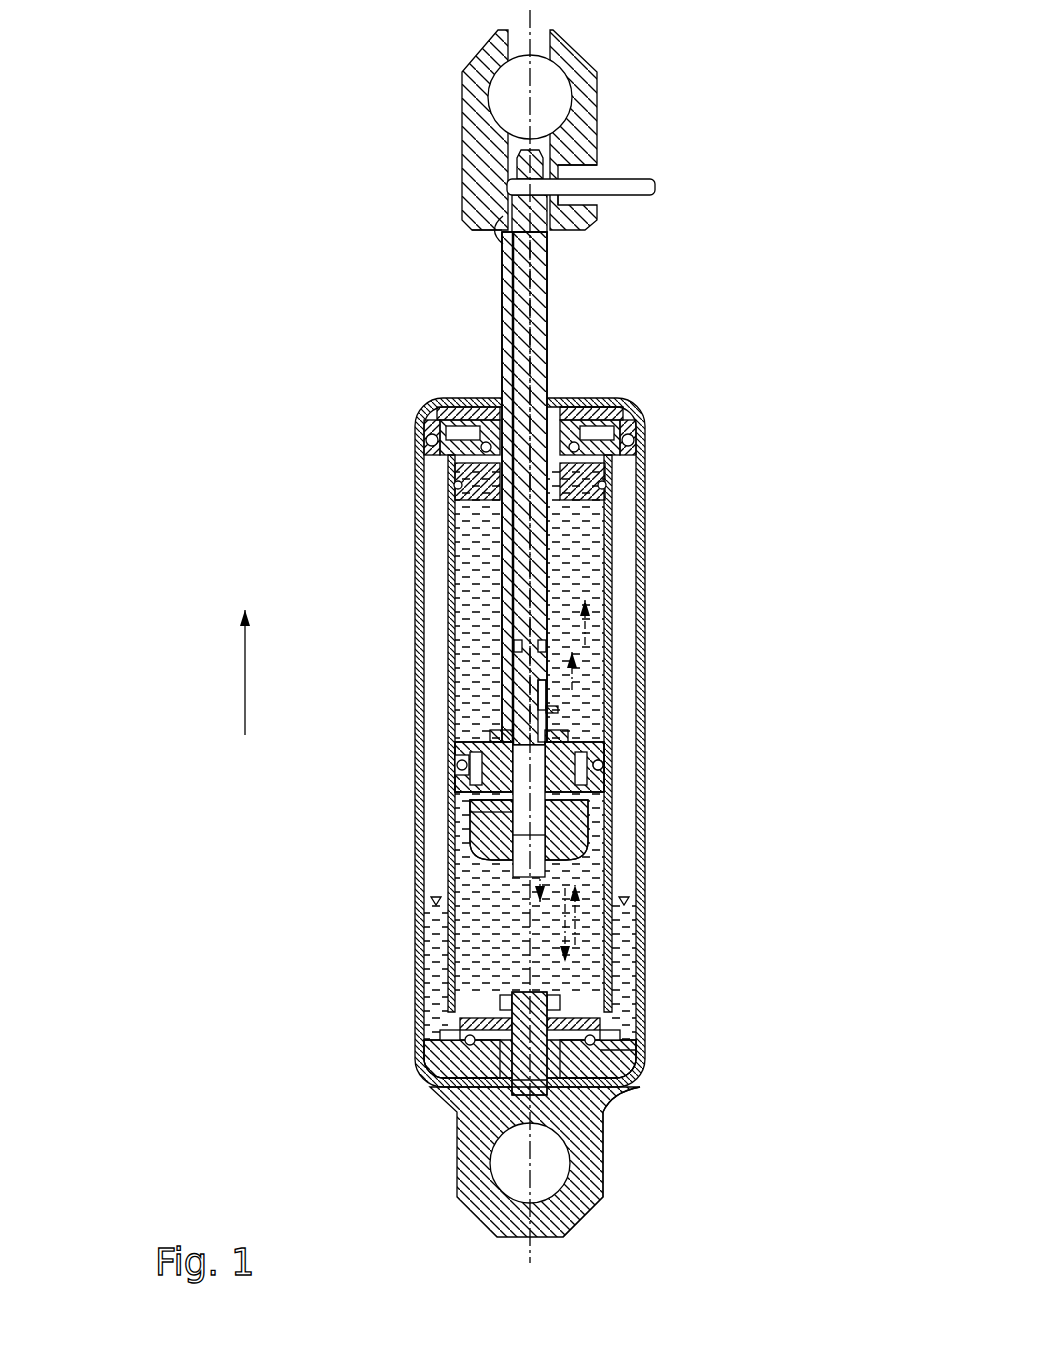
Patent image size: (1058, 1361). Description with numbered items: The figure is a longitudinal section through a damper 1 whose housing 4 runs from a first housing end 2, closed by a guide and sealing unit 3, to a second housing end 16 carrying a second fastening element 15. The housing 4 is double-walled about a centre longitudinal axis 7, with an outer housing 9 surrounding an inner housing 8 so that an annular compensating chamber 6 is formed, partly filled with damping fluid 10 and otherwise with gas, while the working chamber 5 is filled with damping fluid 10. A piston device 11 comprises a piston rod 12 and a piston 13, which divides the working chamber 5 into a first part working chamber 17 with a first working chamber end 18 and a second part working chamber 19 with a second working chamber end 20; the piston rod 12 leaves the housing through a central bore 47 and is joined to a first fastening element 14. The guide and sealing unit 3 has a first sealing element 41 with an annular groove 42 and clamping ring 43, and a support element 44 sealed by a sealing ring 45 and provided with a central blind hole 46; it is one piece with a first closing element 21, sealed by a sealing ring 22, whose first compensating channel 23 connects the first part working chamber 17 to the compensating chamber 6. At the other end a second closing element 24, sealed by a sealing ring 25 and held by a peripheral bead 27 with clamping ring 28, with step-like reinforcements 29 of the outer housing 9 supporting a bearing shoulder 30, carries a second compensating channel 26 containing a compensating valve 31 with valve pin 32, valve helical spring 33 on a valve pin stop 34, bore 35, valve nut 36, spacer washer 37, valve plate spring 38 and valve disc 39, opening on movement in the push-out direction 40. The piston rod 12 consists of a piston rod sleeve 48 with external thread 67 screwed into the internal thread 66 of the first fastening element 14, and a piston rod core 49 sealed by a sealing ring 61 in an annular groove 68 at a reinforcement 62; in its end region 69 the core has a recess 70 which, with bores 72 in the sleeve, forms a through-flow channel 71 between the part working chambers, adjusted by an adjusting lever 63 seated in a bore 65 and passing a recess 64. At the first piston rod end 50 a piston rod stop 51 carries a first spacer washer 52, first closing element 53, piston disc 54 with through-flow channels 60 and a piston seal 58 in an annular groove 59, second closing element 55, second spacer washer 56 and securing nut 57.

The damper 1 is at (470, 636).
The first housing end 2 is at (646, 448).
The guide and sealing unit 3 is at (588, 408).
The housing 4 is at (647, 715).
The working chamber 5 is at (609, 572).
The compensating chamber 6 is at (628, 878).
The centre longitudinal axis 7 is at (528, 300).
The inner housing 8 is at (590, 600).
The outer housing 9 is at (590, 655).
The damping fluid 10 is at (598, 912).
The piston device 11 is at (482, 693).
The piston rod 12 is at (495, 328).
The piston 13 is at (472, 728).
The first fastening element 14 is at (458, 119).
The second fastening element 15 is at (525, 1163).
The second housing end 16 is at (628, 1098).
The first part working chamber 17 is at (609, 572).
The first working chamber end 18 is at (627, 520).
The second part working chamber 19 is at (610, 940).
The second working chamber end 20 is at (582, 1030).
The first closing element 21 is at (614, 470).
The sealing ring 22 is at (600, 487).
The first compensating channel 23 is at (602, 460).
The second closing element 24 is at (492, 1096).
The sealing ring 25 is at (610, 1060).
The second compensating channel 26 is at (620, 1076).
The peripheral bead 27 is at (481, 1073).
The clamping ring 28 is at (450, 1052).
The step-like reinforcements 29 is at (600, 1020).
The bearing shoulder 30 is at (460, 1040).
The compensating valve 31 is at (468, 1020).
The valve pin 32 is at (585, 1200).
The valve helical spring 33 is at (590, 1150).
The valve pin stop 34 is at (504, 1082).
The bore 35 is at (470, 1037).
The valve nut 36 is at (483, 1000).
The spacer washer 37 is at (498, 1012).
The valve plate spring 38 is at (598, 1040).
The valve disc 39 is at (594, 1002).
The push-out direction 40 is at (245, 678).
The first sealing element 41 is at (592, 398).
The annular groove 42 is at (604, 412).
The clamping ring 43 is at (626, 425).
The support element 44 is at (428, 437).
The sealing ring 45 is at (445, 443).
The central blind hole 46 is at (466, 408).
The central bore 47 is at (523, 437).
The piston rod sleeve 48 is at (541, 247).
The piston rod core 49 is at (557, 225).
The first piston rod end 50 is at (572, 780).
The piston rod stop 51 is at (598, 765).
The first spacer washer 52 is at (527, 700).
The first closing element 53 is at (468, 743).
The piston disc 54 is at (498, 790).
The second closing element 55 is at (474, 804).
The second spacer washer 56 is at (484, 840).
The securing nut 57 is at (482, 858).
The piston seal 58 is at (478, 770).
The annular groove 59 is at (560, 795).
The through-flow channels 60 is at (458, 765).
The sealing ring 61 is at (462, 488).
The reinforcement 62 is at (472, 498).
The adjusting lever 63 is at (656, 187).
The recess 64 is at (598, 176).
The bore 65 is at (546, 188).
The internal thread 66 is at (487, 212).
The external thread 67 is at (503, 253).
The annular groove 68 is at (482, 455).
The end region 69 is at (540, 645).
The recess 70 is at (514, 645).
The through-flow channel 71 is at (560, 692).
The bores 72 is at (556, 722).